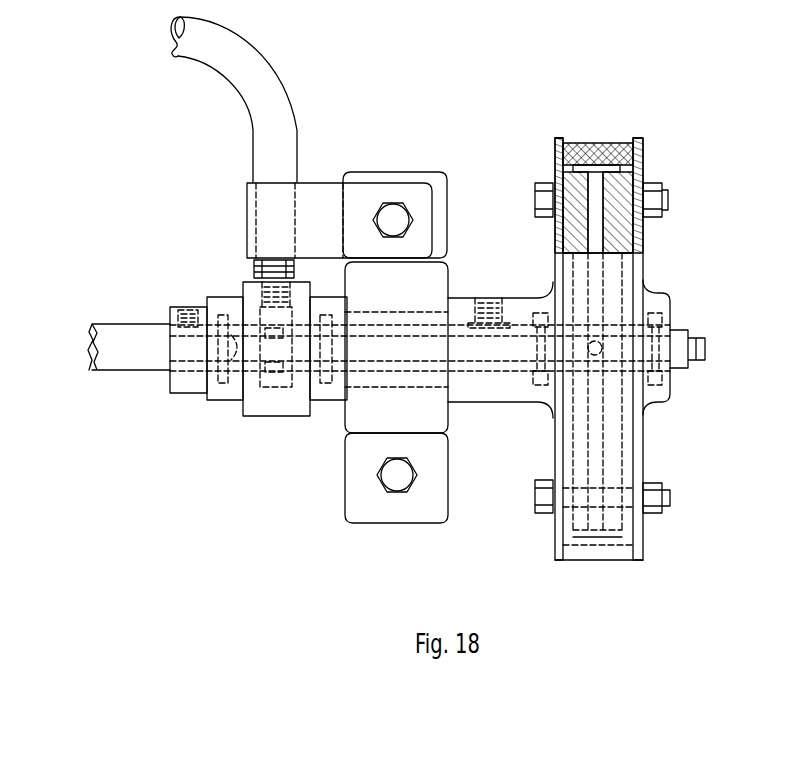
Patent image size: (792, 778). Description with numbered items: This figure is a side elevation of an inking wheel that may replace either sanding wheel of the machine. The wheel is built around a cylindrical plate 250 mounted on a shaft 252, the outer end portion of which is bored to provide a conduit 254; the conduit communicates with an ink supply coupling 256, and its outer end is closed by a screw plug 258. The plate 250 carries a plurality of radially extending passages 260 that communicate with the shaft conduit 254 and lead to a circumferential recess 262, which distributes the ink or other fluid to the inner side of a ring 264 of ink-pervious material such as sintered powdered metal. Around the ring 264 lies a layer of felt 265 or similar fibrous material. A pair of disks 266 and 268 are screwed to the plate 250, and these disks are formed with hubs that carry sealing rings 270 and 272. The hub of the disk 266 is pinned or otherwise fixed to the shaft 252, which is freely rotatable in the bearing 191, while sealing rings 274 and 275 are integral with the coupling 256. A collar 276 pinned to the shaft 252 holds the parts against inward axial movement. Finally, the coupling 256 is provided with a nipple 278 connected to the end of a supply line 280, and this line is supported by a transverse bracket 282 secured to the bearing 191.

The bearing 191 is at (395, 172).
The cylindrical plate 250 is at (620, 247).
The shaft 252 is at (141, 330).
The conduit 254 is at (460, 357).
The ink supply coupling 256 is at (266, 418).
The screw plug 258 is at (707, 345).
The radially extending passages 260 is at (598, 225).
The circumferential recess 262 is at (625, 178).
The ring 264 is at (605, 145).
The layer of felt 265 is at (585, 120).
The disk 266 is at (555, 160).
The disk 268 is at (642, 150).
The sealing ring 270 is at (537, 313).
The sealing ring 272 is at (655, 312).
The sealing ring 274 is at (225, 402).
The sealing ring 275 is at (327, 402).
The collar 276 is at (170, 385).
The nipple 278 is at (254, 270).
The supply line 280 is at (278, 90).
The transverse bracket 282 is at (312, 183).